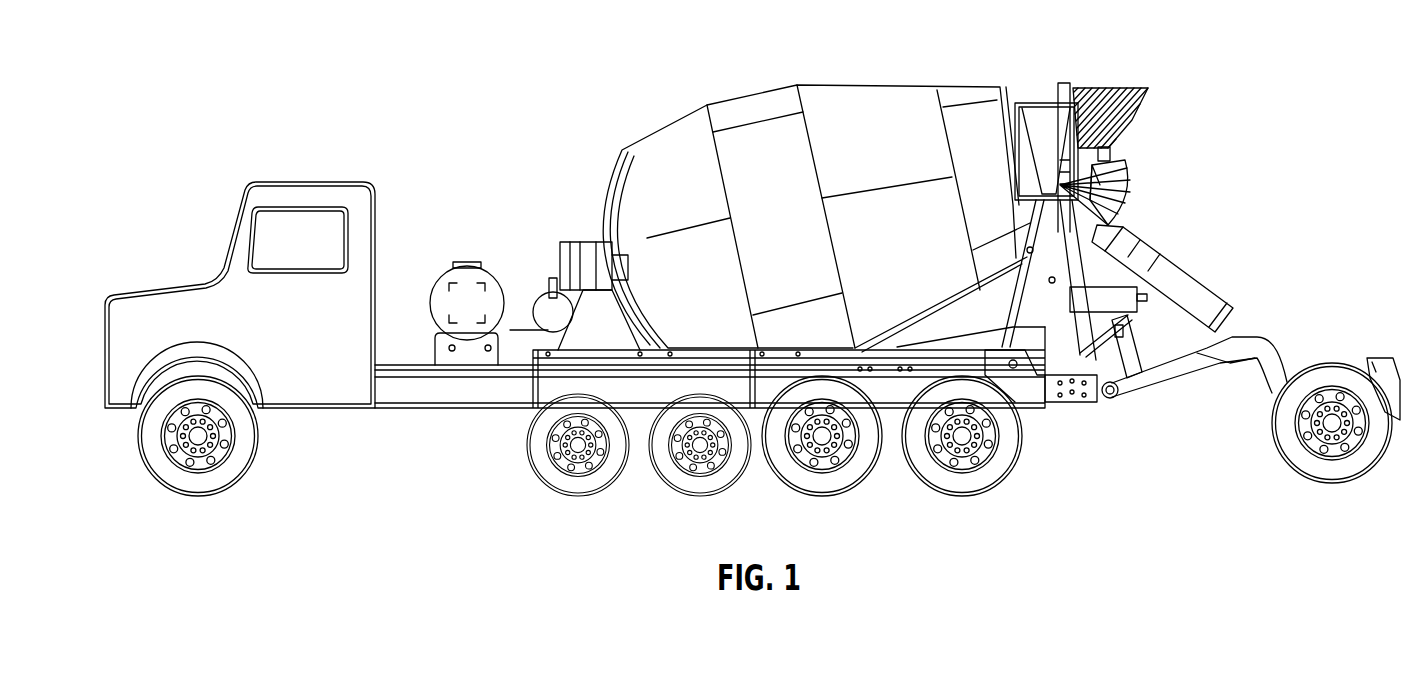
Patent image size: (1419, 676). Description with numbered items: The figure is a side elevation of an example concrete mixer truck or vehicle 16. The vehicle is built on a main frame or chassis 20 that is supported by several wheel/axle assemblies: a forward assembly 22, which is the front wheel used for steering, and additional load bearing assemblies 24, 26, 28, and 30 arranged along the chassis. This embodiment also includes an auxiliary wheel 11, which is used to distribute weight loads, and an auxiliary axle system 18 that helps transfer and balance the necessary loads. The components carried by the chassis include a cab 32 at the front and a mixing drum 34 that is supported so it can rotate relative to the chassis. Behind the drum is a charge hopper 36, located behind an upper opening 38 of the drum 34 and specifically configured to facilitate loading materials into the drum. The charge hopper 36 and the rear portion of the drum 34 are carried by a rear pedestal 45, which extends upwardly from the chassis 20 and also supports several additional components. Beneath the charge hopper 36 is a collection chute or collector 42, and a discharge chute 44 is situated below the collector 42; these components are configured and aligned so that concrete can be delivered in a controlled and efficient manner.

The auxiliary wheel 11 is at (1319, 437).
The concrete mixer truck 16 is at (440, 118).
The auxiliary axle system 18 is at (1262, 339).
The main frame or chassis 20 is at (435, 393).
The forward assembly 22 is at (175, 485).
The load bearing assembly 24 is at (567, 485).
The load bearing assembly 26 is at (697, 483).
The load bearing assembly 28 is at (817, 485).
The load bearing assembly 30 is at (952, 483).
The cab 32 is at (190, 296).
The mixing drum 34 is at (848, 97).
The charge hopper 36 is at (1145, 99).
The upper opening 38 is at (1113, 148).
The collection chute or collector 42 is at (1130, 200).
The discharge chute 44 is at (1180, 262).
The rear pedestal 45 is at (1040, 238).